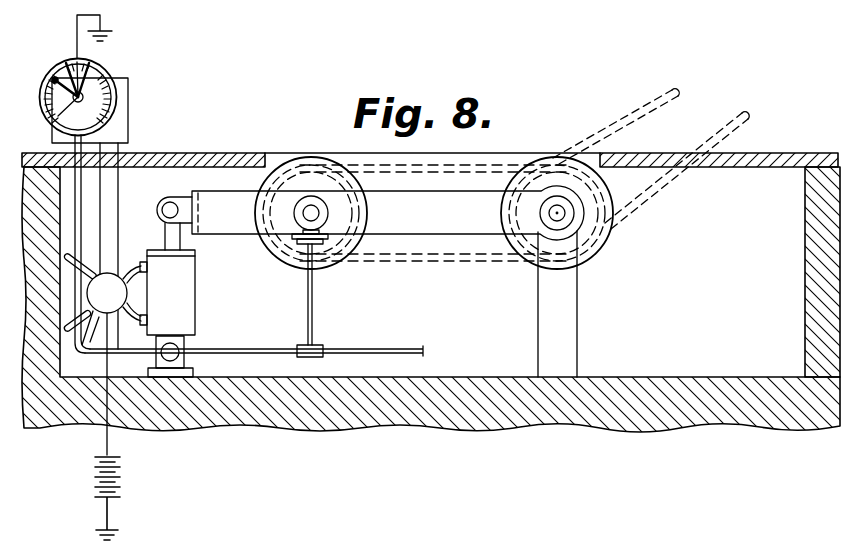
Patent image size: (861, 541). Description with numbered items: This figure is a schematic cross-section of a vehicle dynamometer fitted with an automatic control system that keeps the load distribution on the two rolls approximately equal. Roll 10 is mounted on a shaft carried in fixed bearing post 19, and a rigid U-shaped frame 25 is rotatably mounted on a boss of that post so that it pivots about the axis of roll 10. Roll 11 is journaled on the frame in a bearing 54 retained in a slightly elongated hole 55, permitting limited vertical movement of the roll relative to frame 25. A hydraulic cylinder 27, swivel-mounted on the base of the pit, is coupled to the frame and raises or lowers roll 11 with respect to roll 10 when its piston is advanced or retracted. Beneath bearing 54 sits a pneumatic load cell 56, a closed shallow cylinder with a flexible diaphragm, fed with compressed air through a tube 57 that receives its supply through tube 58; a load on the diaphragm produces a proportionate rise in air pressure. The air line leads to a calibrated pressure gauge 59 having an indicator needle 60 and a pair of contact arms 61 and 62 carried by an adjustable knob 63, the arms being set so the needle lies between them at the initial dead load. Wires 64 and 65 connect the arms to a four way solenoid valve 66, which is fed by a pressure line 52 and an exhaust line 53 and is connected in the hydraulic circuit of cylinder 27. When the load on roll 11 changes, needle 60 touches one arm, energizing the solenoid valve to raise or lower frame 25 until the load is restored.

The roll 10 is at (547, 163).
The roll 11 is at (318, 158).
The bearing post 19 is at (578, 301).
The U-shaped frame 25 is at (468, 214).
The hydraulic cylinder 27 is at (186, 307).
The pressure line 52 is at (82, 261).
The exhaust line 53 is at (78, 254).
The bearing 54 is at (314, 216).
The elongated hole 55 is at (327, 208).
The pneumatic load cell 56 is at (323, 244).
The tube 57 is at (313, 297).
The tube 58 is at (384, 349).
The pressure gauge 59 is at (96, 74).
The indicator needle 60 is at (67, 62).
The contact arm 61 is at (53, 78).
The contact arm 62 is at (87, 68).
The adjustable knob 63 is at (50, 121).
The wire 64 is at (106, 130).
The wire 65 is at (129, 92).
The four way solenoid valve 66 is at (121, 294).